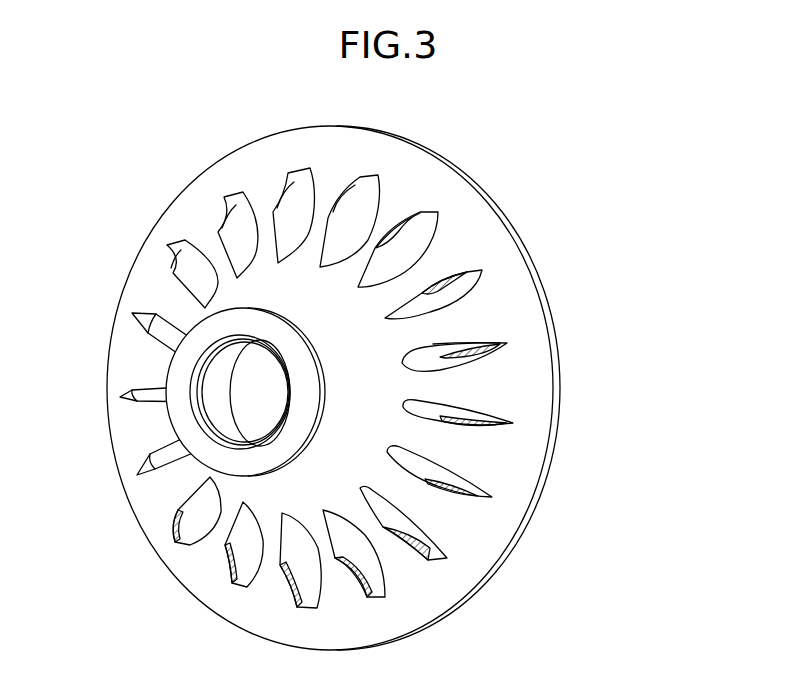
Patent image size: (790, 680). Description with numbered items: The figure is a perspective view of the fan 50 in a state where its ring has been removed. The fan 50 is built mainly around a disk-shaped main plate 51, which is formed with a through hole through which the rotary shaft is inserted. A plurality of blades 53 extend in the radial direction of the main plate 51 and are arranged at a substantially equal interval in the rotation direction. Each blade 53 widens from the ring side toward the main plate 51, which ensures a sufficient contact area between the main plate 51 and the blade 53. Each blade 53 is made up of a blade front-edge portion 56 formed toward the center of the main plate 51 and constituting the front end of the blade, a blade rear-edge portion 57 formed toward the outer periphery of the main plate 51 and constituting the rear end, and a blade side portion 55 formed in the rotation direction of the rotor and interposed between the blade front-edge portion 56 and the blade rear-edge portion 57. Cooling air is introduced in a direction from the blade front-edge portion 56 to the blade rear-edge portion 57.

The fan 50 is at (448, 133).
The main plate 51 is at (487, 243).
The blade 53 is at (388, 353).
The blade side portion 55 is at (433, 344).
The blade front-edge portion 56 is at (403, 363).
The blade rear-edge portion 57 is at (507, 343).